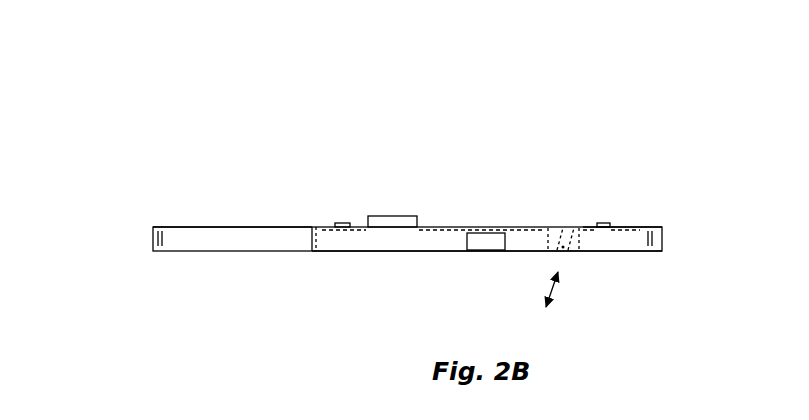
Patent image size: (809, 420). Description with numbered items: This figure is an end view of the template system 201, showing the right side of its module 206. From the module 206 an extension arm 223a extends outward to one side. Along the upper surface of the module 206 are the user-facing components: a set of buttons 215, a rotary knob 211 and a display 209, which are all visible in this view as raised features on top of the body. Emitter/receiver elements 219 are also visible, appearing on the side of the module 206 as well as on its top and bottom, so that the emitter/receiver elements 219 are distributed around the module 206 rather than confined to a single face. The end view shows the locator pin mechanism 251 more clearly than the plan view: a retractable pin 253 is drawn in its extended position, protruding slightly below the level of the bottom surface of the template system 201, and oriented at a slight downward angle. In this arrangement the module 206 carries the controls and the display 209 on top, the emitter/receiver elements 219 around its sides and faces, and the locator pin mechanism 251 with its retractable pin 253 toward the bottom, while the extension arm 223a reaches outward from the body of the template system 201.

The template system 201 is at (477, 86).
The module 206 is at (635, 225).
The display 209 is at (515, 227).
The rotary knob 211 is at (402, 216).
The buttons 215 is at (342, 223).
The emitter/receiver elements 219 is at (310, 237).
The extension arm 223a is at (208, 227).
The locator pin mechanism 251 is at (553, 225).
The retractable pin 253 is at (562, 254).